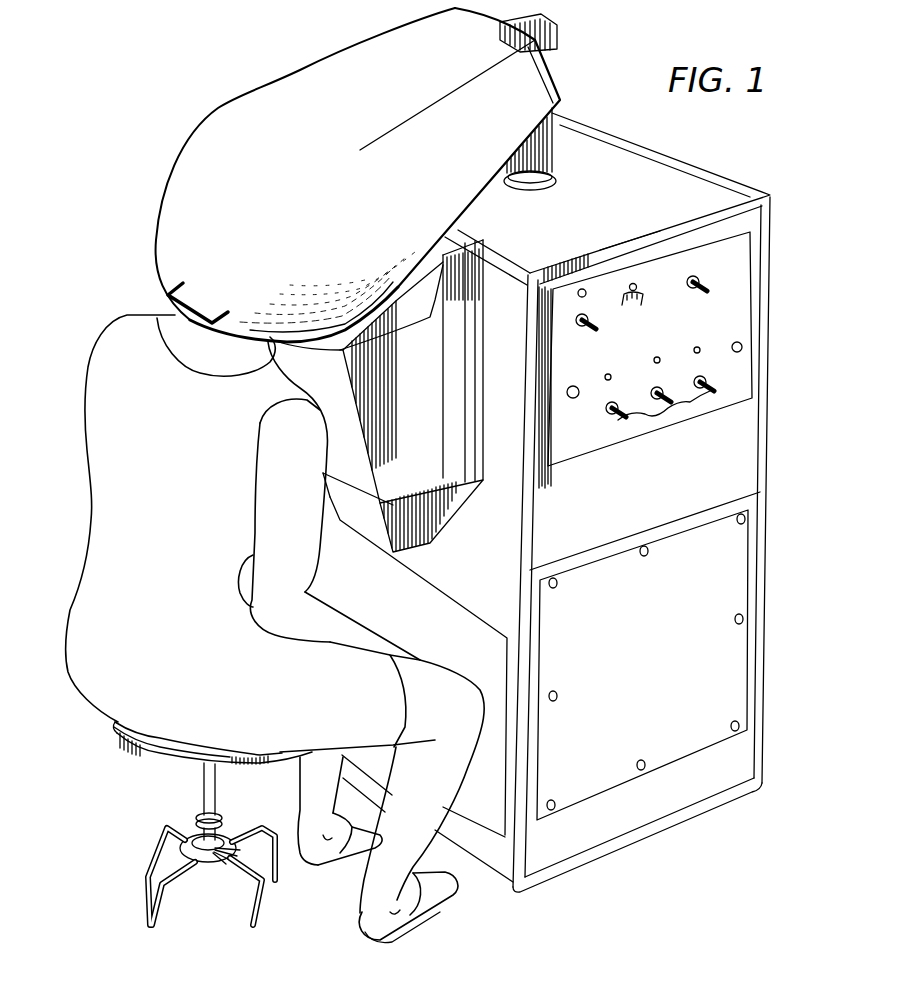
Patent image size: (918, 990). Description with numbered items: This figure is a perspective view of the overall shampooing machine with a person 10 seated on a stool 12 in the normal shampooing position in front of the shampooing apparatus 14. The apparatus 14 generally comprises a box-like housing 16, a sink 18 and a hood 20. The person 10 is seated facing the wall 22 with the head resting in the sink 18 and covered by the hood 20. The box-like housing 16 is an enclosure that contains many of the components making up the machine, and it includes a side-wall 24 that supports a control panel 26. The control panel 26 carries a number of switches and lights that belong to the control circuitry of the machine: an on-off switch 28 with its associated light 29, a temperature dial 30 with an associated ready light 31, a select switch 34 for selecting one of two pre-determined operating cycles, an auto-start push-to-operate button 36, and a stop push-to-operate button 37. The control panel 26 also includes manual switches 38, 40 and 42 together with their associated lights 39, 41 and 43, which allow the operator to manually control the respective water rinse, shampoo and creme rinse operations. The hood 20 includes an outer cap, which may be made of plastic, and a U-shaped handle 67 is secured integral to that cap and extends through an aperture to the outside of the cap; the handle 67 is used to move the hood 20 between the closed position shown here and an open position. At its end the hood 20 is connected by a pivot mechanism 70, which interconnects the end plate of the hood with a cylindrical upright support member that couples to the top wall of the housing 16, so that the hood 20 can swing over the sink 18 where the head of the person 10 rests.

The person 10 is at (103, 533).
The stool 12 is at (150, 757).
The shampooing apparatus 14 is at (742, 465).
The box-like housing 16 is at (668, 500).
The sink 18 is at (436, 401).
The hood 20 is at (285, 225).
The wall 22 is at (494, 520).
The side-wall 24 is at (753, 428).
The control panel 26 is at (627, 246).
The on-off switch 28 is at (577, 340).
The light 29 is at (584, 289).
The temperature dial 30 is at (646, 308).
The ready light 31 is at (638, 286).
The select switch 34 is at (708, 292).
The auto-start push-to-operate button 36 is at (568, 397).
The stop push-to-operate button 37 is at (743, 347).
The manual switch 38 is at (613, 415).
The light 39 is at (604, 377).
The manual switch 40 is at (675, 397).
The light 41 is at (655, 357).
The manual switch 42 is at (714, 388).
The light 43 is at (702, 348).
The U-shaped handle 67 is at (207, 307).
The pivot mechanism 70 is at (556, 28).